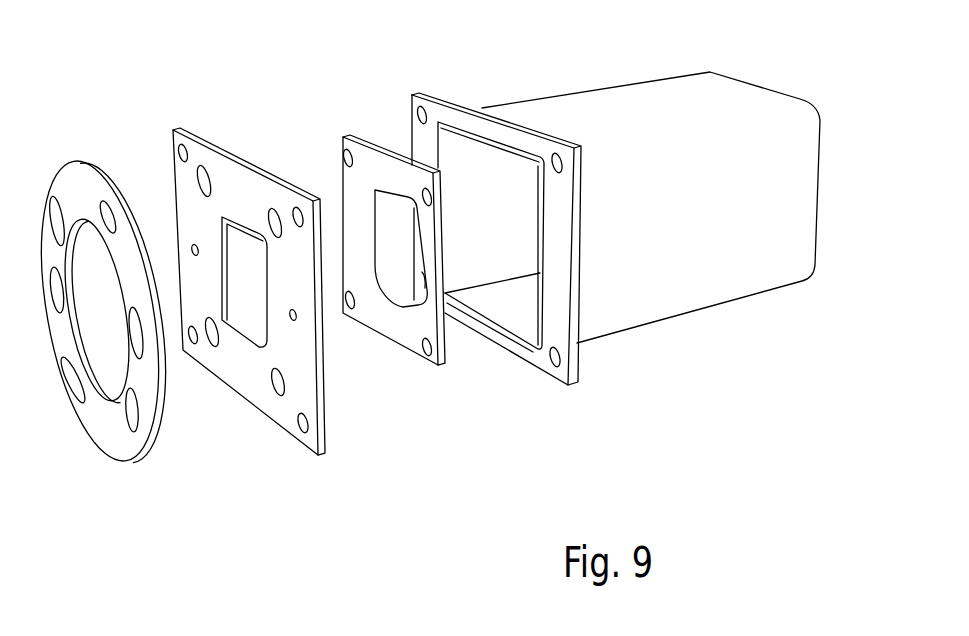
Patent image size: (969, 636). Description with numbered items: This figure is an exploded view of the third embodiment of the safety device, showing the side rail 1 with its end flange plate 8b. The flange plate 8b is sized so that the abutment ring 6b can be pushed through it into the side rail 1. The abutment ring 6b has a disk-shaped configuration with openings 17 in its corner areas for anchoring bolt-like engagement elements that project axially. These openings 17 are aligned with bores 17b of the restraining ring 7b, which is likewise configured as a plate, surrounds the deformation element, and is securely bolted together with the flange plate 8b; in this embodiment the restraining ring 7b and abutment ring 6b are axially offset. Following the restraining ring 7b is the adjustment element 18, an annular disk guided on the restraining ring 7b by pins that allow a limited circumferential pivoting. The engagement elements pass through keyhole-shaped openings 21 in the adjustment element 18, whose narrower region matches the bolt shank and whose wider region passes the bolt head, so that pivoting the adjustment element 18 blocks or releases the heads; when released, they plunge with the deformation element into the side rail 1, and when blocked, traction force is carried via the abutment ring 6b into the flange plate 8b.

The side rail 1 is at (703, 297).
The abutment ring 6b is at (367, 157).
The restraining ring 7b is at (203, 148).
The flange plate 8b is at (570, 340).
The openings 17 is at (440, 363).
The bores 17b is at (306, 427).
The adjustment element 18 is at (77, 175).
The openings 21 is at (138, 413).